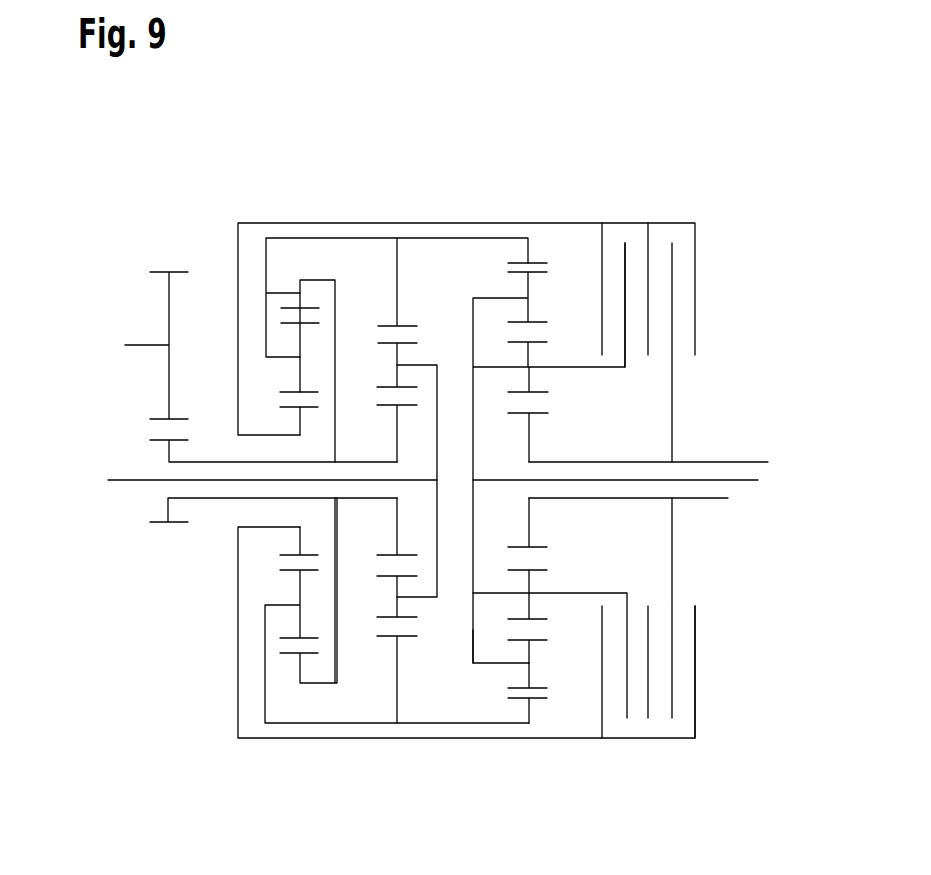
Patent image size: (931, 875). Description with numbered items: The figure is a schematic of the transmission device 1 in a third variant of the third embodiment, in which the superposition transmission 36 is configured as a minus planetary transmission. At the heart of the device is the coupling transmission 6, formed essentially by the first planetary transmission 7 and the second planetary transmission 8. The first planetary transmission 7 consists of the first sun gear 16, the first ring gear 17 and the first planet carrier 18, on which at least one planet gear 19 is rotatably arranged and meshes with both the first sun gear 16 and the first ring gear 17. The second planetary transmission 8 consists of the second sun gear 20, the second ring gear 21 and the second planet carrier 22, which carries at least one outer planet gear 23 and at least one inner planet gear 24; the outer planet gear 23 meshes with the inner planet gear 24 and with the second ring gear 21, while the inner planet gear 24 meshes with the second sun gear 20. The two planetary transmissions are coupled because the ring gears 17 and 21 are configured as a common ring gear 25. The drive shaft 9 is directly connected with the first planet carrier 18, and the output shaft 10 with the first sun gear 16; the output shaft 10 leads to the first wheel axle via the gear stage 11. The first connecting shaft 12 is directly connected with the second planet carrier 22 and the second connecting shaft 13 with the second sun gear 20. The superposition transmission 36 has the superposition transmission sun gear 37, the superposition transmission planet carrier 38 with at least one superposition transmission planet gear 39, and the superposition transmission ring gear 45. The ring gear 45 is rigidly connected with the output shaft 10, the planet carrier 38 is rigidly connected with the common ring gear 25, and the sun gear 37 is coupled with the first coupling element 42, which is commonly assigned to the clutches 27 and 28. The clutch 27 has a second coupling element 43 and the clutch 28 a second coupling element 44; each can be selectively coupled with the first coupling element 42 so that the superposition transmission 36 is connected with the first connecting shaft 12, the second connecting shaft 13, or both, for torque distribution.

The transmission device 1 is at (562, 127).
The coupling transmission 6 is at (382, 188).
The first planetary transmission 7 is at (387, 750).
The second planetary transmission 8 is at (523, 750).
The drive shaft 9 is at (120, 482).
The output shaft 10 is at (207, 500).
The gear stage 11 is at (70, 382).
The first connecting shaft 12 is at (742, 482).
The second connecting shaft 13 is at (752, 460).
The first sun gear 16 is at (397, 532).
The first ring gear 17 is at (313, 237).
The first planet carrier 18 is at (437, 365).
The planet gear 19 is at (395, 380).
The second sun gear 20 is at (528, 523).
The second ring gear 21 is at (530, 712).
The second planet carrier 22 is at (473, 643).
The outer planet gear 23 is at (528, 653).
The inner planet gear 24 is at (528, 605).
The common ring gear 25 is at (450, 237).
The clutch 27 is at (627, 212).
The clutch 28 is at (680, 210).
The superposition transmission 36 is at (247, 187).
The superposition transmission sun gear 37 is at (290, 410).
The superposition transmission planet carrier 38 is at (266, 312).
The superposition transmission planet gear 39 is at (300, 340).
The first coupling element 42 is at (612, 222).
The second coupling element 43 is at (625, 263).
The second coupling element 44 is at (672, 310).
The superposition transmission ring gear 45 is at (266, 293).